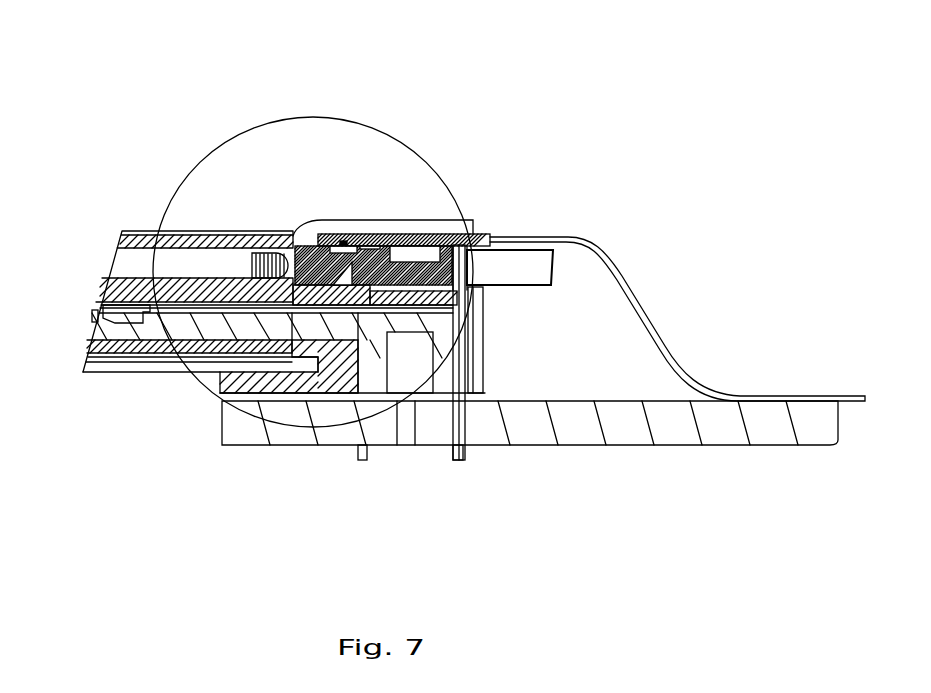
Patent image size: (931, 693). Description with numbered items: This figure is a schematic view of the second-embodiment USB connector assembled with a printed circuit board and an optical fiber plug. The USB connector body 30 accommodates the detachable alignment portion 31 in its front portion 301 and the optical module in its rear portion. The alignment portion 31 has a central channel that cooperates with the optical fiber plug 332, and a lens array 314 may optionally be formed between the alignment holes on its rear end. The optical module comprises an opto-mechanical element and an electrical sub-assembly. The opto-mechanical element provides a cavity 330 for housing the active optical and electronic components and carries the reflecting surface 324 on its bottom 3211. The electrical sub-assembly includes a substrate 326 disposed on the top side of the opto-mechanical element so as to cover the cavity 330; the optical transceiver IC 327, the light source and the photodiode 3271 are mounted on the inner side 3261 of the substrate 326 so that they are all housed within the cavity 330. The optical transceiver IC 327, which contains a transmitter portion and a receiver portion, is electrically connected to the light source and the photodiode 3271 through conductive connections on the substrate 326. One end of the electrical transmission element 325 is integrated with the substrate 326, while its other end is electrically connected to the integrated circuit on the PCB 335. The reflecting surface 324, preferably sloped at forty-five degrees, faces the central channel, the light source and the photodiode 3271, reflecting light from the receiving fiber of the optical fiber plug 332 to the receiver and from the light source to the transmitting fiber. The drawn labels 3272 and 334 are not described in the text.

The USB connector body 30 is at (197, 386).
The alignment portion 31 is at (122, 232).
The front portion 301 is at (182, 278).
The lens array 314 is at (268, 255).
The reflecting surface 324 is at (324, 257).
The electrical transmission element 325 is at (657, 308).
The substrate 326 is at (432, 240).
The inner side 3261 is at (462, 244).
The optical transceiver IC 327 is at (397, 58).
The photodiode 3271 is at (341, 241).
The sensor strip 3272 is at (376, 240).
The cavity 330 is at (410, 248).
The optical fiber plug 332 is at (207, 262).
The elastic block 334 is at (452, 267).
The PCB 335 is at (578, 428).
The bottom 3211 is at (362, 290).